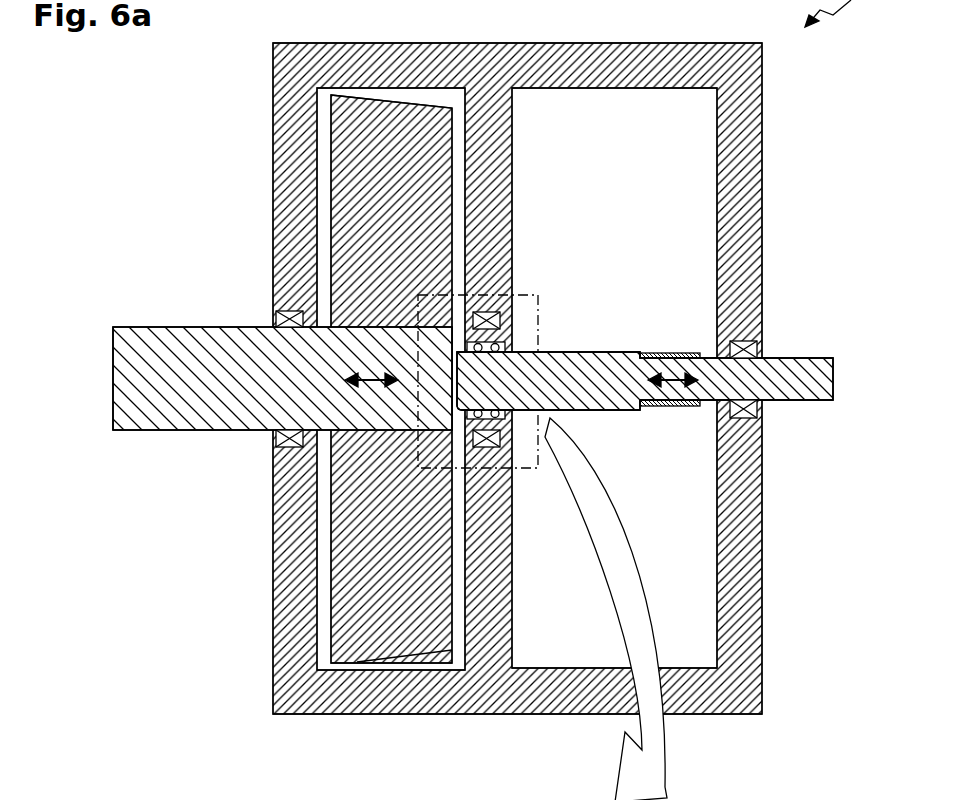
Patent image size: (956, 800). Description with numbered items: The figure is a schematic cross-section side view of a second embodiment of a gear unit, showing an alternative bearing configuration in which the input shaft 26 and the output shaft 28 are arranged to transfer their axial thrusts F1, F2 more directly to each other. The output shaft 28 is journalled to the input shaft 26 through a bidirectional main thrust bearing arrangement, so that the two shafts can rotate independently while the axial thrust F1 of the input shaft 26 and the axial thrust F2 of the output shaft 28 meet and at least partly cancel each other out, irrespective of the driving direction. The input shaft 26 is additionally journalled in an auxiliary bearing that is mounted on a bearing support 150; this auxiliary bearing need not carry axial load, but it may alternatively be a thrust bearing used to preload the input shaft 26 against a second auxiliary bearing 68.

The input shaft 26 is at (130, 401).
The output shaft 28 is at (782, 365).
The second auxiliary bearing 68 is at (275, 312).
The bearing support 150 is at (493, 280).
The axial thrust of the input shaft F1 is at (357, 386).
The axial thrust of the output shaft F2 is at (683, 374).